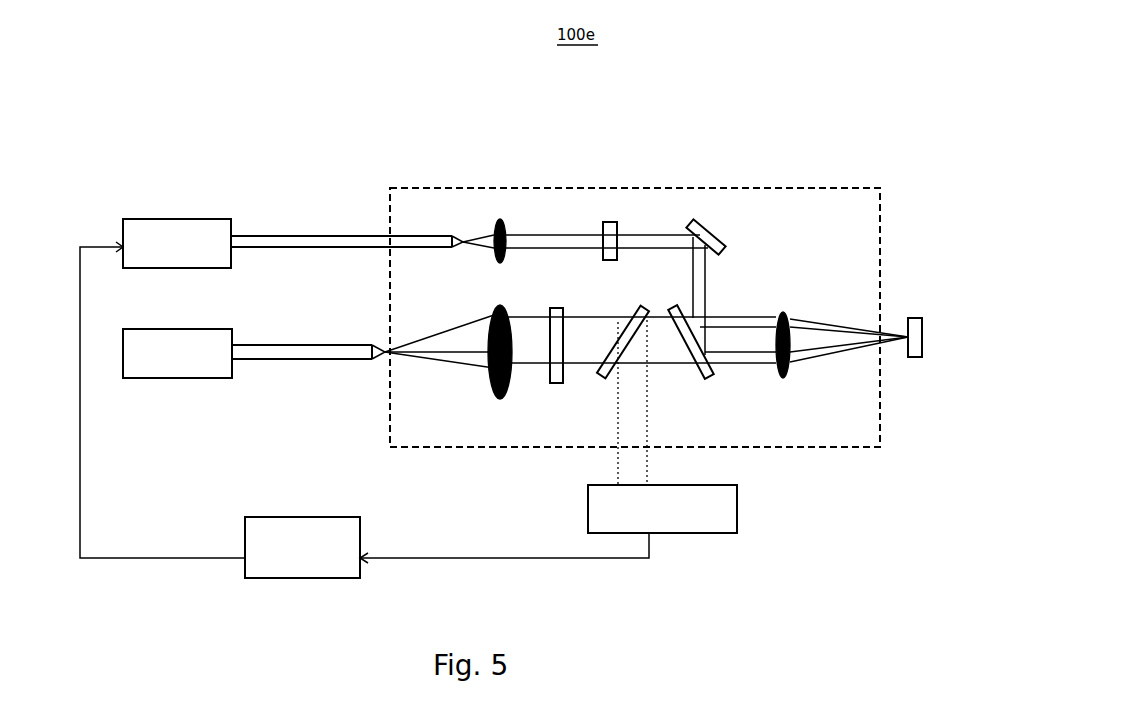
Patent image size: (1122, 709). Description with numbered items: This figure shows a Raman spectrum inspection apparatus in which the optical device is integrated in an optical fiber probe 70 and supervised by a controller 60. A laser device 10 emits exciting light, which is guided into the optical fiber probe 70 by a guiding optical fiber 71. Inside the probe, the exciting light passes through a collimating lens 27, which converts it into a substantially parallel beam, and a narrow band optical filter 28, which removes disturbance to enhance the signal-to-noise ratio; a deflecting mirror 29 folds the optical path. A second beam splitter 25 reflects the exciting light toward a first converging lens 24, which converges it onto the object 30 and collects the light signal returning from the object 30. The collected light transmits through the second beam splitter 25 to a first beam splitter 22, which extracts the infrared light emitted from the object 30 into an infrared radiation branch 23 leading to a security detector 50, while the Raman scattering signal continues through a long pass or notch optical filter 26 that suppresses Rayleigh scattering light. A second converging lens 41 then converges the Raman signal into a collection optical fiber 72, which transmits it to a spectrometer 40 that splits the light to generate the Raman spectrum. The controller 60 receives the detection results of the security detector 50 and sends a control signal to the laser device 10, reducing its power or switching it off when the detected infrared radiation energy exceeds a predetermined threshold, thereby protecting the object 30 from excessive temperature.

The laser device 10 is at (163, 219).
The spectrometer 40 is at (163, 378).
The guiding optical fiber 71 is at (300, 235).
The collection optical fiber 72 is at (298, 355).
The optical fiber probe 70 is at (882, 213).
The collimating lens 27 is at (503, 228).
The narrow band optical filter 28 is at (608, 225).
The deflecting mirror 29 is at (712, 226).
The second beam splitter 25 is at (712, 372).
The first converging lens 24 is at (785, 320).
The object 30 is at (922, 330).
The second converging lens 41 is at (490, 388).
The long pass optical filter or notch optical filter 26 is at (555, 383).
The first beam splitter 22 is at (615, 370).
The infrared radiation branch 23 is at (650, 383).
The security detector 50 is at (705, 533).
The controller 60 is at (275, 578).